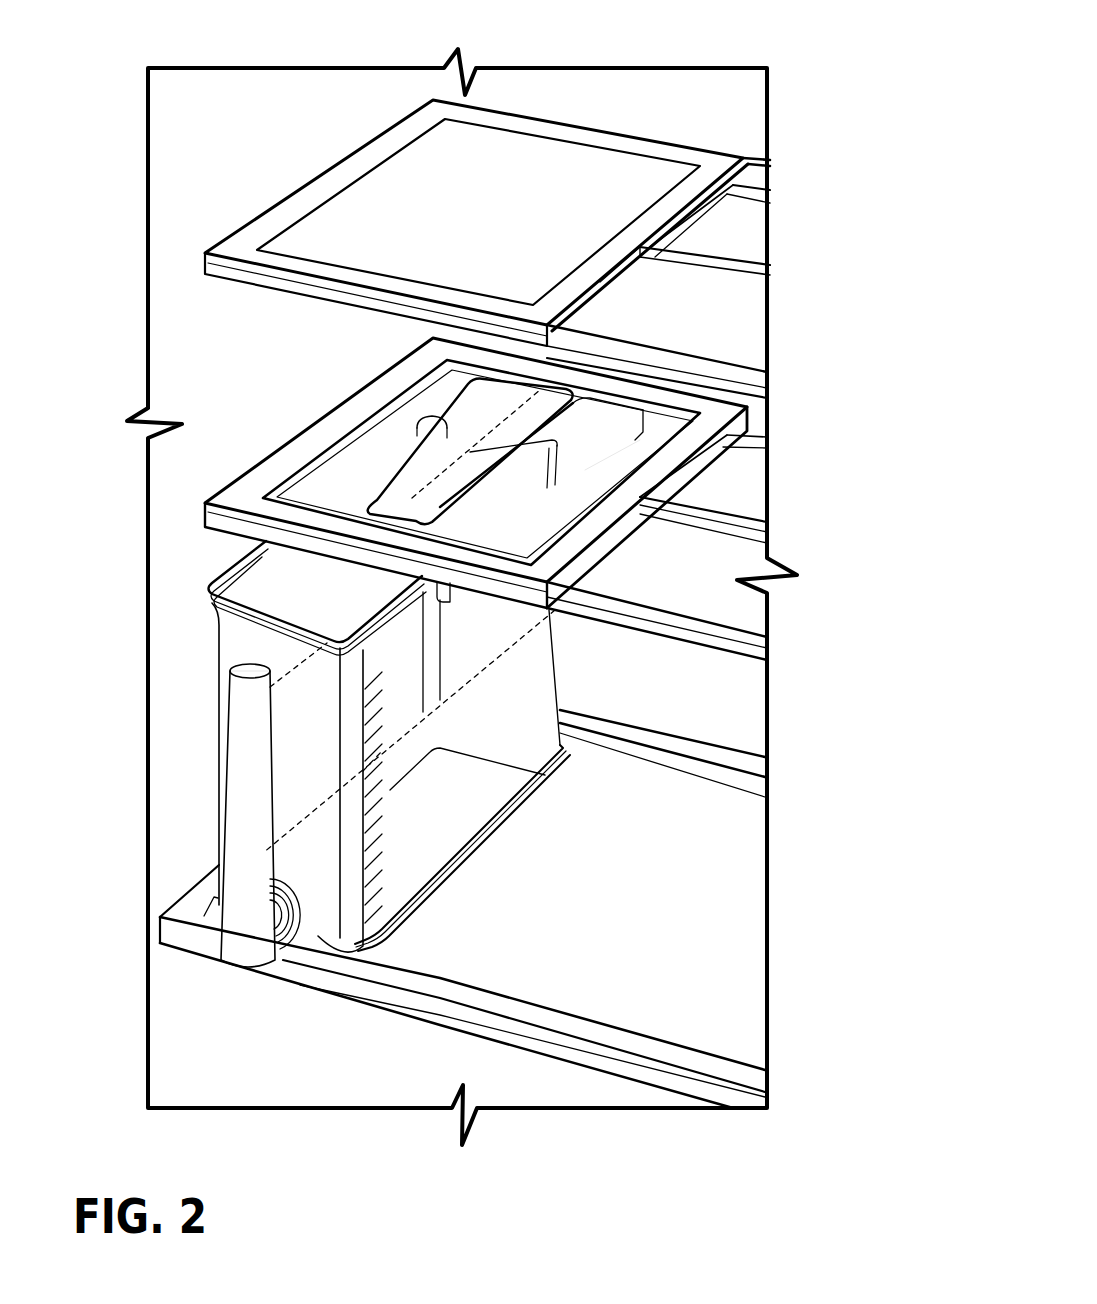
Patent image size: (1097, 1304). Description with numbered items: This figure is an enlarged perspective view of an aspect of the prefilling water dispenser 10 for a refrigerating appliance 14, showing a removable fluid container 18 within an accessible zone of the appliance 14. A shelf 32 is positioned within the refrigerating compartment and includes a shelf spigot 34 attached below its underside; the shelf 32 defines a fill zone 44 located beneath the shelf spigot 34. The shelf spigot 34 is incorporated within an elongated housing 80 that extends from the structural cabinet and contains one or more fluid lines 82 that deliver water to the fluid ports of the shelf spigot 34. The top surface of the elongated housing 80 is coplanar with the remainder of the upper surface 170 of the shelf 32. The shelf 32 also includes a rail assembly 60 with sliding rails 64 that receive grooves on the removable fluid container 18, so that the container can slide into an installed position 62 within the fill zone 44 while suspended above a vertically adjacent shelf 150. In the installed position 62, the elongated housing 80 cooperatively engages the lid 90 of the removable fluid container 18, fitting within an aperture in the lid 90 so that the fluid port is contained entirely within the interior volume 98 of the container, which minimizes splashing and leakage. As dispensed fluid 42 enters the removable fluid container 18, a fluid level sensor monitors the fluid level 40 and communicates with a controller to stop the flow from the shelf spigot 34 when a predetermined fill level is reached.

The appliance 14 is at (612, 57).
The prefilling water dispenser 10 is at (617, 362).
The upper surface 170 is at (701, 584).
The elongated housing 80 is at (480, 425).
The shelf spigot 34 is at (432, 447).
The fluid line 82 is at (478, 405).
The rail assembly 60 is at (630, 443).
The sliding rail 64 is at (607, 457).
The shelf 32 is at (530, 592).
The lid 90 is at (267, 573).
The vertically adjacent shelf 150 is at (350, 973).
The removable fluid container 18 is at (295, 852).
The fill zone 44 is at (215, 631).
The interior volume 98 is at (252, 647).
The fluid level 40 is at (363, 771).
The dispensed fluid 42 is at (470, 780).
The installed position 62 is at (492, 845).